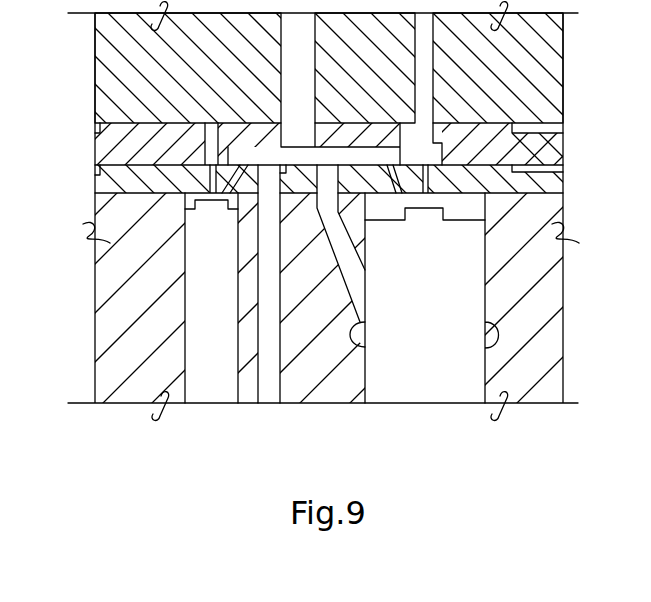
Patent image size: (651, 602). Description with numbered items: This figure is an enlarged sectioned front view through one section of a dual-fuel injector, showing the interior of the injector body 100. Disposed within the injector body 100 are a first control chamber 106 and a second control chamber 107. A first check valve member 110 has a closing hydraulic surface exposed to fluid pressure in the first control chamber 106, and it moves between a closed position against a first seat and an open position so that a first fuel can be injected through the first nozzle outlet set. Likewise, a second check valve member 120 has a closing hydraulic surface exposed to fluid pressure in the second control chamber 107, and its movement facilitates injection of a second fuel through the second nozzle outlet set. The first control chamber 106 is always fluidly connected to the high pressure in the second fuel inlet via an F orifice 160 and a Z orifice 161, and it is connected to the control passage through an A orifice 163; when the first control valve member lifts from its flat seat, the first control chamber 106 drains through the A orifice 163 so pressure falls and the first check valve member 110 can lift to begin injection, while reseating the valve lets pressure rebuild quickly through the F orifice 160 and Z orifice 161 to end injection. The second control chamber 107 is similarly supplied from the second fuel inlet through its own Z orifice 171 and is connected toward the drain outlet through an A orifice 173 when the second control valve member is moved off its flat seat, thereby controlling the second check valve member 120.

The injector body 100 is at (95, 102).
The first control chamber 106 is at (466, 203).
The second control chamber 107 is at (190, 195).
The first check valve member 110 is at (453, 310).
The second check valve member 120 is at (205, 313).
The F orifice 160 is at (377, 147).
The Z orifice 161 is at (420, 165).
The A orifice 163 is at (430, 181).
The Z orifice 171 is at (243, 193).
The A orifice 173 is at (204, 182).